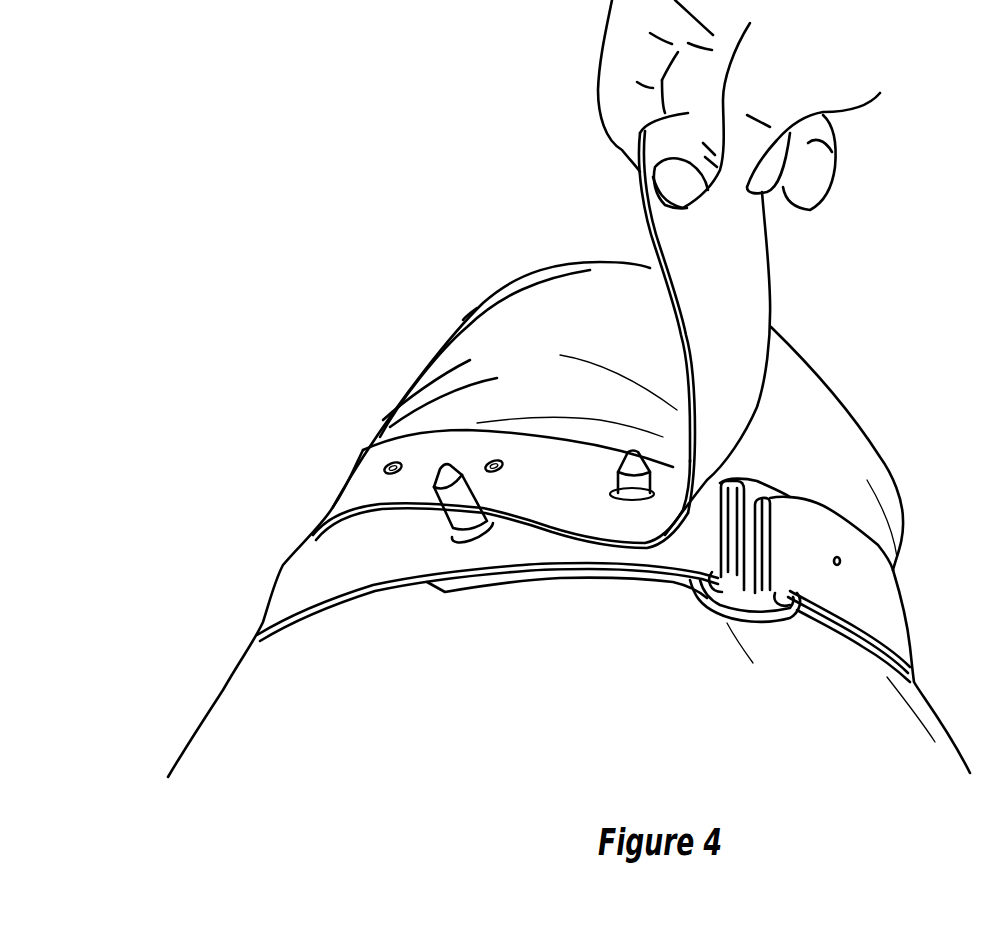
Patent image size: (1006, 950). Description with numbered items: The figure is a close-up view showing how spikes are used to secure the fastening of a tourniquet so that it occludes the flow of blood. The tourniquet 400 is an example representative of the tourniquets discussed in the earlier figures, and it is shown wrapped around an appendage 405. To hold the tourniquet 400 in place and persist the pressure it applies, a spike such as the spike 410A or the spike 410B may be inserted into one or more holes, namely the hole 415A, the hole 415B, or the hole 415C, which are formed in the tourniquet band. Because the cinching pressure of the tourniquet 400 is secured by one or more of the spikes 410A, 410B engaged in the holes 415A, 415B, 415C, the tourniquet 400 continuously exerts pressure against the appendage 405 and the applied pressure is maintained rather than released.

The tourniquet 400 is at (770, 272).
The appendage 405 is at (885, 485).
The spike 410A is at (632, 483).
The spike 410B is at (460, 510).
The hole 415A is at (635, 502).
The hole 415B is at (490, 463).
The hole 415C is at (383, 463).